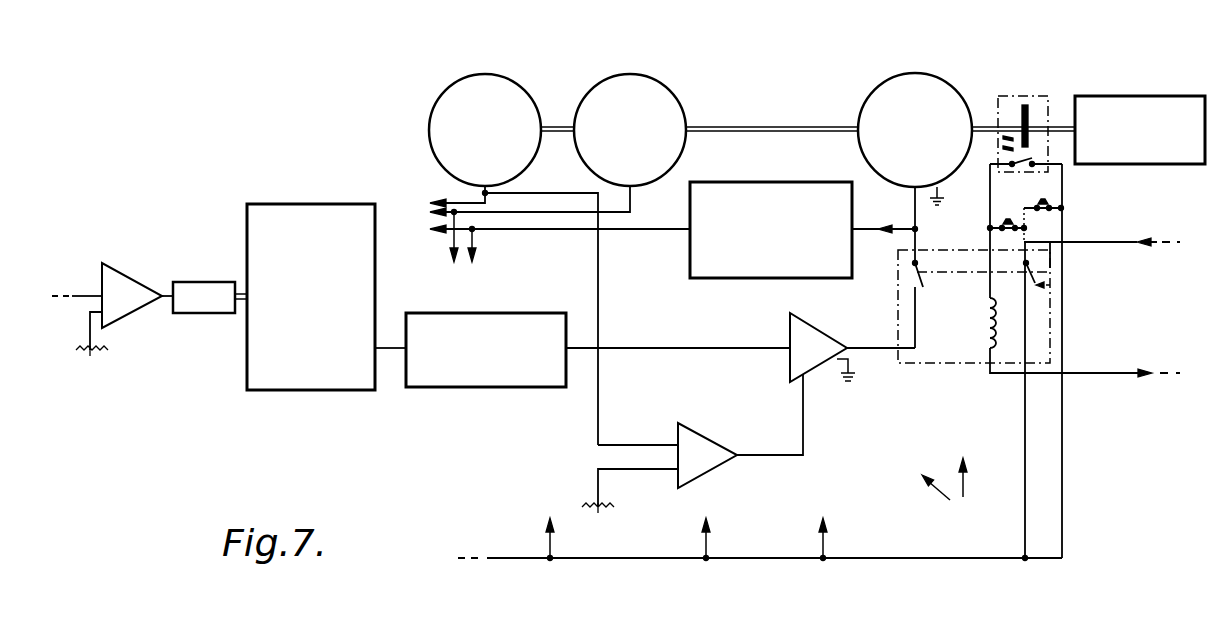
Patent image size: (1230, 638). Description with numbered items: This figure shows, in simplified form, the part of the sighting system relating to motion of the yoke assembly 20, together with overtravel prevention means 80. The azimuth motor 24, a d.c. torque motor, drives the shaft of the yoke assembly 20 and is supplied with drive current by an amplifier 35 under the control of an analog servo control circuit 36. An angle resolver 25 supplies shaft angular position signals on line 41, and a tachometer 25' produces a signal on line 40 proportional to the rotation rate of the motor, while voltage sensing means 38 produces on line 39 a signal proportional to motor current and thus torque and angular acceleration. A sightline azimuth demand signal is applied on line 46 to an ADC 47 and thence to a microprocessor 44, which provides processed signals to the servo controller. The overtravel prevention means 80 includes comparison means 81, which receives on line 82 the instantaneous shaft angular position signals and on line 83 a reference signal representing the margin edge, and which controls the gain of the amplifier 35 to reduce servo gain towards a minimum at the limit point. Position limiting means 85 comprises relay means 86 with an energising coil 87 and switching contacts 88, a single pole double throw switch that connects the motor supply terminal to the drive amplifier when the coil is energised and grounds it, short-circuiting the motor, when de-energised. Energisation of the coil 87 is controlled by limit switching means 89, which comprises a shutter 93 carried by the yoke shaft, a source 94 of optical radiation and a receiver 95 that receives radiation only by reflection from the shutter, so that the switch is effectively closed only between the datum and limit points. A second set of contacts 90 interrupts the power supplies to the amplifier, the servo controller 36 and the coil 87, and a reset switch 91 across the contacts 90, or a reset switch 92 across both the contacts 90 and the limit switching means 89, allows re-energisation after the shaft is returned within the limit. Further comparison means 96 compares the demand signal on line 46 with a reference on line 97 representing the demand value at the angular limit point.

The yoke assembly 20 is at (1192, 97).
The azimuth motor 24 is at (915, 78).
The angle resolver 25 is at (485, 105).
The tachometer 25' is at (630, 105).
The amplifier 35 is at (790, 328).
The analog servo control circuit 36 is at (487, 387).
The voltage sensing means 38 is at (769, 182).
The line 39 is at (654, 232).
The line 40 is at (633, 196).
The line 41 is at (460, 203).
The microprocessor 44 is at (313, 390).
The line 46 is at (80, 296).
The ADC 47 is at (205, 282).
The overtravel prevention means 80 is at (760, 509).
The comparison means 81 is at (707, 445).
The line 82 is at (600, 398).
The line 83 is at (645, 470).
The position limiting means 85 is at (1080, 303).
The relay means 86 is at (957, 365).
The energising coil 87 is at (985, 320).
The switching contacts 88 is at (913, 275).
The limit switching means 89 is at (1057, 152).
The second set of contacts 90 is at (1037, 282).
The reset switch 91 is at (1063, 205).
The reset switch 92 is at (1000, 225).
The shutter 93 is at (1034, 98).
The source of optical radiation 94 is at (1003, 137).
The receiver 95 is at (1005, 150).
The further comparison means 96 is at (132, 312).
The line 97 is at (90, 328).